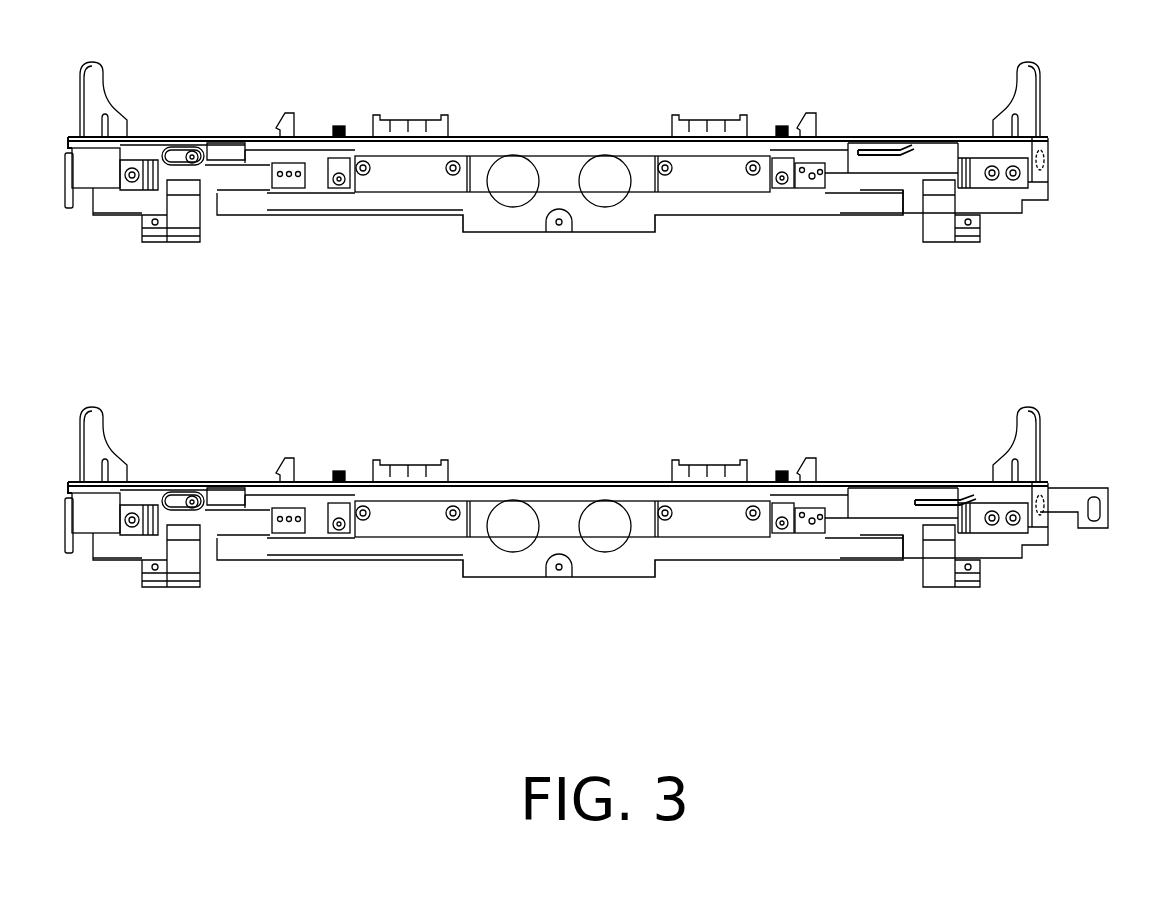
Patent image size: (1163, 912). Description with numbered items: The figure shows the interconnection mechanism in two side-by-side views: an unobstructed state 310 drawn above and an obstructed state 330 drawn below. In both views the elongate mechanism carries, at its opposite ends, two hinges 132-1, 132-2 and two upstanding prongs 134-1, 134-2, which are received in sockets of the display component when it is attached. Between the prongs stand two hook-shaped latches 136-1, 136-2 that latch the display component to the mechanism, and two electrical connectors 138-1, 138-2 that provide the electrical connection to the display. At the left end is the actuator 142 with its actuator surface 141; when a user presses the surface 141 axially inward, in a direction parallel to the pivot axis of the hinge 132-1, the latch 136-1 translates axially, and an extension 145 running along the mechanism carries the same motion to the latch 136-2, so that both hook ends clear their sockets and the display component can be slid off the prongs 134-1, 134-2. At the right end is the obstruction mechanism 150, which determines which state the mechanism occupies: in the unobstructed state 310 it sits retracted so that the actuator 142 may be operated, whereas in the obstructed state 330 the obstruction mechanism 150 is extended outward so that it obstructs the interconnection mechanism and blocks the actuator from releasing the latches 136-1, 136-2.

The unobstructed state 310 is at (610, 50).
The obstructed state 330 is at (610, 395).
The prong 134-1 is at (104, 92).
The prong 134-2 is at (1013, 83).
The latch 136-1 is at (283, 122).
The latch 136-2 is at (814, 123).
The electrical connector 138-1 is at (430, 118).
The electrical connector 138-2 is at (685, 118).
The obstruction mechanism 150 is at (928, 126).
The actuator 142 is at (113, 182).
The actuator surface 141 is at (67, 208).
The hinge 132-1 is at (193, 222).
The hinge 132-2 is at (935, 217).
The extension 145 is at (442, 195).